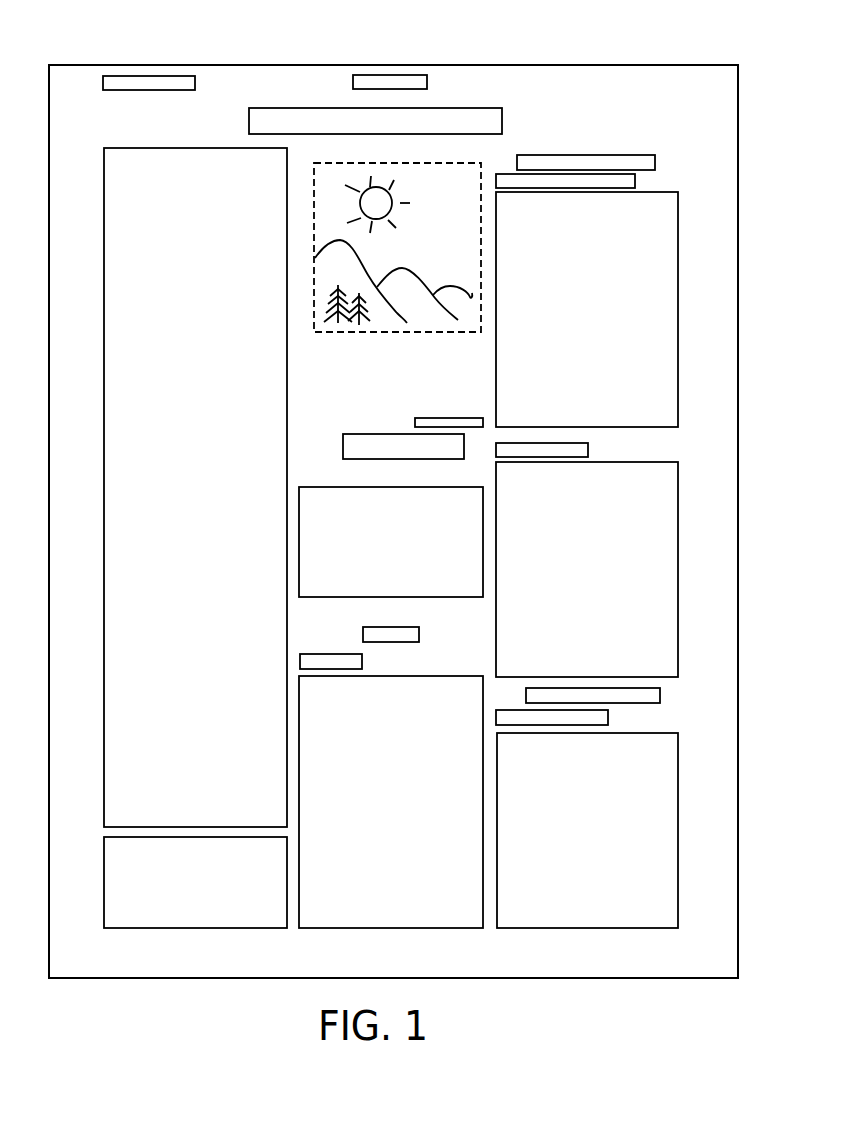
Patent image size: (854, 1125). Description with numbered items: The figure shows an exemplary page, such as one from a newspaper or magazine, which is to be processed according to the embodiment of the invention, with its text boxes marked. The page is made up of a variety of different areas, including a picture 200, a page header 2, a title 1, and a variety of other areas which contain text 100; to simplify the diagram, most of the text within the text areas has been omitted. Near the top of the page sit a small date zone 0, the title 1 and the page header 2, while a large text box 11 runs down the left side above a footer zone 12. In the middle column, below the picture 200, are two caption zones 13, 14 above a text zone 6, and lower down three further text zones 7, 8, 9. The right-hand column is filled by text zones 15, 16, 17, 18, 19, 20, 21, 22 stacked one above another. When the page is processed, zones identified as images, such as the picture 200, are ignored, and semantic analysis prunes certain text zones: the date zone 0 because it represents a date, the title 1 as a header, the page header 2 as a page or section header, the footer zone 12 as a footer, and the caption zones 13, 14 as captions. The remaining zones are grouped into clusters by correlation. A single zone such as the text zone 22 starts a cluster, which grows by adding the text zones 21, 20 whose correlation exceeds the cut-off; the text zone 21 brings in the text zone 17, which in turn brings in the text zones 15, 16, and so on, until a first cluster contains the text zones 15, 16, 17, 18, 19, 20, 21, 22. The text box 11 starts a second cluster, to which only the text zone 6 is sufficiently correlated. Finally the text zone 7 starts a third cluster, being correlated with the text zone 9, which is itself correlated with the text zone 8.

The date zone 0 is at (103, 85).
The title 1 is at (427, 81).
The page header 2 is at (502, 122).
The text zone 6 is at (318, 487).
The text zone 7 is at (363, 633).
The text zone 8 is at (362, 661).
The text zone 9 is at (444, 676).
The text box 11 is at (104, 184).
The footer zone 12 is at (104, 880).
The caption zone 13 is at (444, 418).
The caption zone 14 is at (360, 434).
The text zone 15 is at (644, 155).
The text zone 16 is at (635, 178).
The text zone 17 is at (678, 307).
The text zone 18 is at (588, 448).
The text zone 19 is at (678, 567).
The text zone 20 is at (660, 694).
The text zone 21 is at (608, 716).
The text zone 22 is at (678, 807).
The text areas 100 is at (120, 244).
The picture 200 is at (438, 192).